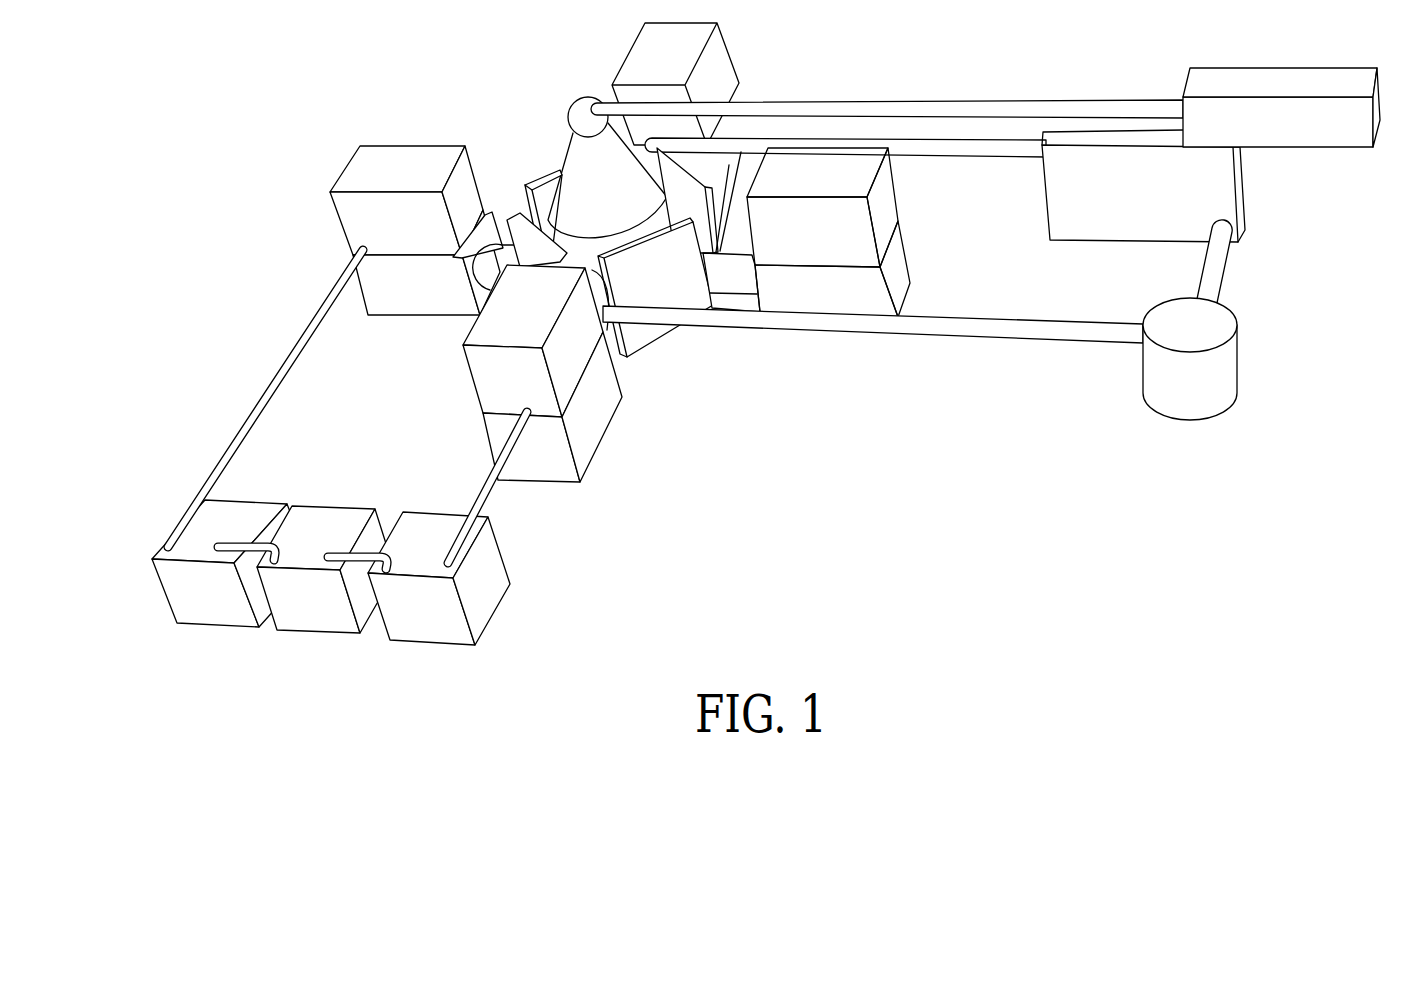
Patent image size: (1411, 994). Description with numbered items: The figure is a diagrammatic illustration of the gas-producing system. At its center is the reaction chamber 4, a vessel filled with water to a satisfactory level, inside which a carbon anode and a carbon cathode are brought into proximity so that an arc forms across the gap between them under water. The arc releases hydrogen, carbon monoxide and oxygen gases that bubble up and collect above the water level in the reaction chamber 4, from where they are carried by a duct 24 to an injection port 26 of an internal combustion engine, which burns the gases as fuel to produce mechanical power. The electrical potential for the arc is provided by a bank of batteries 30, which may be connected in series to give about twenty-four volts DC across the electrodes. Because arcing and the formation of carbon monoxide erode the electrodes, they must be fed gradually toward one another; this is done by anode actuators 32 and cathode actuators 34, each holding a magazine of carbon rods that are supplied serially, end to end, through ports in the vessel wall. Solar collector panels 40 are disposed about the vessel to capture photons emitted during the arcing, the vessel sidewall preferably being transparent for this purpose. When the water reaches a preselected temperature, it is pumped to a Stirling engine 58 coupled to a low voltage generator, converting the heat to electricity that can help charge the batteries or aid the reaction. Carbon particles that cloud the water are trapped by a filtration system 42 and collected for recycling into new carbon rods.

The reaction chamber 4 is at (580, 163).
The duct 24 is at (870, 100).
The injection port 26 is at (1238, 83).
The bank of batteries 30 is at (487, 590).
The anode actuators 32 is at (348, 212).
The cathode actuators 34 is at (468, 370).
The solar collector panels 40 is at (542, 173).
The filtration system 42 is at (1217, 403).
The Stirling engine 58 is at (1085, 232).